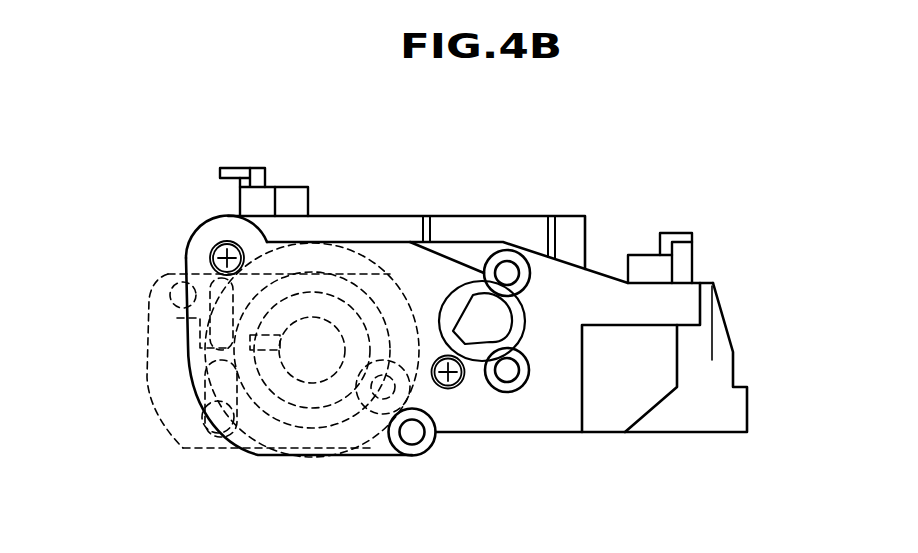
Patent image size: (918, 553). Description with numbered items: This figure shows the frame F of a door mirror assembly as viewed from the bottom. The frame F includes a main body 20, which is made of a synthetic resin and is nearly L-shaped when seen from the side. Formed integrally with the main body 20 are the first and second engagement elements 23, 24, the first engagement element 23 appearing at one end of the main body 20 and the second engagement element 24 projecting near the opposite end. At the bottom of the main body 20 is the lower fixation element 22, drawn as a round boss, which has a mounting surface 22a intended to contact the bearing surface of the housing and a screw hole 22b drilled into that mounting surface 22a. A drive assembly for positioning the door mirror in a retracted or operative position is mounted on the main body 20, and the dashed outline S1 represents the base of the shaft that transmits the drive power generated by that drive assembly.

The main body 20 is at (495, 215).
The lower fixation element 22 is at (411, 457).
The mounting surface 22a is at (417, 450).
The screw hole 22b is at (420, 437).
The first engagement element 23 is at (697, 245).
The second engagement element 24 is at (240, 193).
The base of shaft S1 is at (147, 388).
The frame F is at (389, 188).